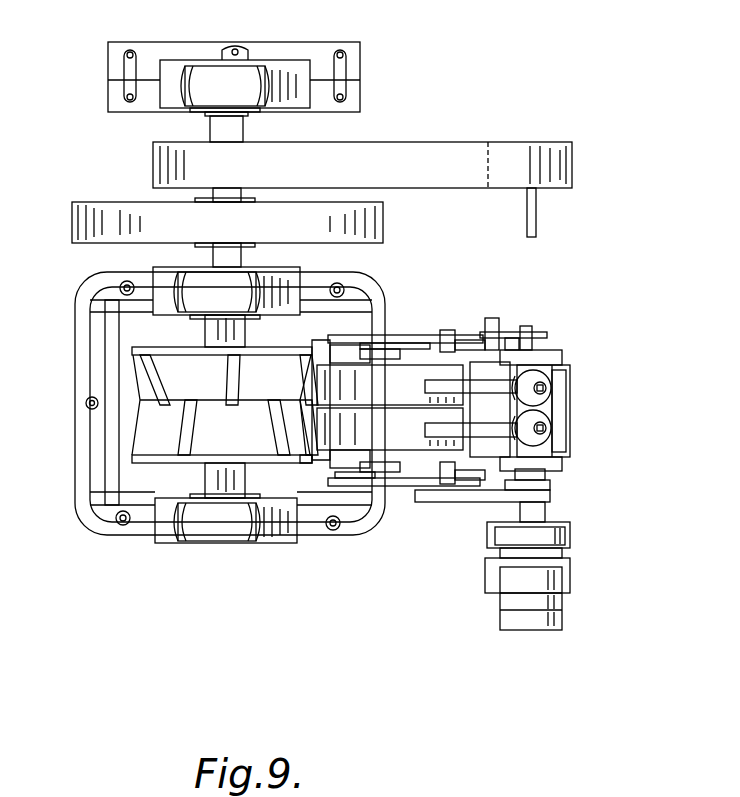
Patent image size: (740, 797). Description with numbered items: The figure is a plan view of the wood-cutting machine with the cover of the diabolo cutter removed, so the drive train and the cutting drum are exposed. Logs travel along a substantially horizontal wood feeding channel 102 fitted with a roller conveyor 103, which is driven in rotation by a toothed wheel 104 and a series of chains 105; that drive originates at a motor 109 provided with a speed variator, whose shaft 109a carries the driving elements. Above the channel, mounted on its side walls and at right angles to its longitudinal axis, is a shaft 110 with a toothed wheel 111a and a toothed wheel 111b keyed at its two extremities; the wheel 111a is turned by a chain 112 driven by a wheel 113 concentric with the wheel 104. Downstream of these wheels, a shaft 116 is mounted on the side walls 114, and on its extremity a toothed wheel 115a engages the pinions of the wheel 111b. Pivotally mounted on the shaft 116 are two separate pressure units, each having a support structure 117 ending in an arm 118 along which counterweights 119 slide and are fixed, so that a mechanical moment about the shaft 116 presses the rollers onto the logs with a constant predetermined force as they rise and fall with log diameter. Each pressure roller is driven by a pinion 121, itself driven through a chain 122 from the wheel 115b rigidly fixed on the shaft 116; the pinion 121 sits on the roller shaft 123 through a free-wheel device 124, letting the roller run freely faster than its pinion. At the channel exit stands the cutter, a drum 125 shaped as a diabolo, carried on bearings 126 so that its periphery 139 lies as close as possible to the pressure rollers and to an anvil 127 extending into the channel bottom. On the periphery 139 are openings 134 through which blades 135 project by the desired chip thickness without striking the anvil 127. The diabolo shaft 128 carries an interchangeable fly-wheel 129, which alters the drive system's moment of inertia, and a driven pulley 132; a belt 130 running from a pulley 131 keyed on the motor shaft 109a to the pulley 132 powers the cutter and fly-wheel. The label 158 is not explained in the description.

The wood feeding channel 102 is at (566, 418).
The roller conveyor 103 is at (440, 419).
The toothed wheel 104 is at (530, 340).
The chains 105 is at (395, 336).
The motor 109 is at (570, 576).
The motor shaft 109a is at (527, 210).
The shaft 110 is at (555, 372).
The toothed wheel 111a is at (490, 318).
The toothed wheel 111b is at (550, 496).
The chain 112 is at (528, 326).
The wheel 113 is at (425, 404).
The side walls 114 is at (556, 355).
The toothed wheel 115a is at (430, 502).
The wheel 115b is at (472, 482).
The shaft 116 is at (450, 331).
The support structure 117 is at (390, 407).
The arm 118 is at (552, 380).
The counterweights 119 is at (546, 390).
The pinion 121 is at (370, 350).
The chain 122 is at (378, 340).
The shaft 123 is at (355, 480).
The free-wheel device 124 is at (352, 347).
The drum 125 is at (140, 432).
The bearings 126 is at (205, 76).
The anvil 127 is at (318, 355).
The shaft 128 is at (215, 190).
The fly-wheel 129 is at (376, 216).
The belt 130 is at (410, 150).
The pulley 131 is at (514, 143).
The driven pulley 132 is at (298, 141).
The openings 134 is at (160, 380).
The blades 135 is at (152, 375).
The periphery 139 is at (305, 452).
The link 158 is at (432, 340).